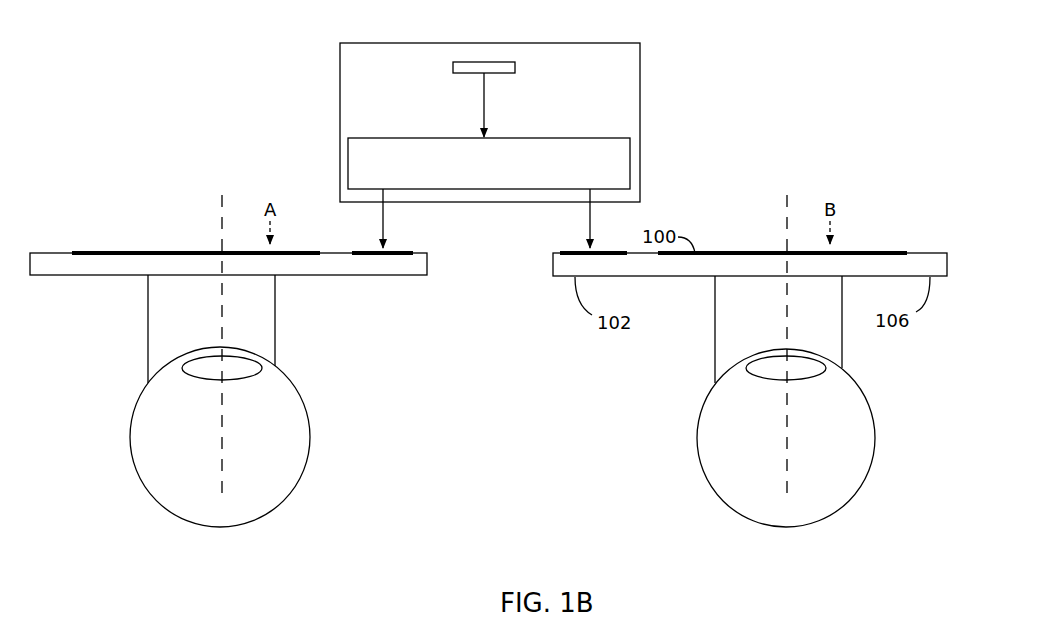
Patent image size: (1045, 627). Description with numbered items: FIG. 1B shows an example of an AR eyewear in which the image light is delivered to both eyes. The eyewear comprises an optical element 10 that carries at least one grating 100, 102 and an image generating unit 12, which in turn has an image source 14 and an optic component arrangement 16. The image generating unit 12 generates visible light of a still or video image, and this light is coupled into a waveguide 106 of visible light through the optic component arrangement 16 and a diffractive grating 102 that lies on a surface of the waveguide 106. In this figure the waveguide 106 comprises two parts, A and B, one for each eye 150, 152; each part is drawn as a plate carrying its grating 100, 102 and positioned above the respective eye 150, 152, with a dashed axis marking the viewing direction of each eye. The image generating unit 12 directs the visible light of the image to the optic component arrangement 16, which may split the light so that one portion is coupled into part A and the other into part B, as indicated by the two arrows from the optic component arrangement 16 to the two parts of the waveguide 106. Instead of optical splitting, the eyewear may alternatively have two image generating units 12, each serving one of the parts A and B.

The optical element 10 is at (168, 193).
The image generating unit 12 is at (370, 75).
The image source 14 is at (517, 68).
The optic component arrangement 16 is at (392, 170).
The grating 100 is at (145, 253).
The diffractive grating 102 is at (397, 277).
The waveguide 106 is at (95, 277).
The eye 150 is at (284, 373).
The eye 152 is at (849, 373).